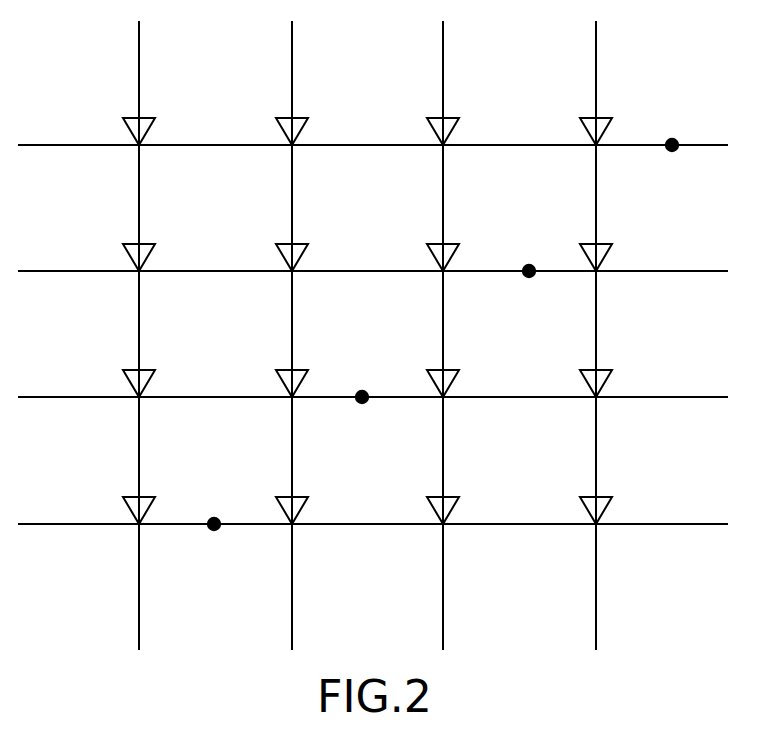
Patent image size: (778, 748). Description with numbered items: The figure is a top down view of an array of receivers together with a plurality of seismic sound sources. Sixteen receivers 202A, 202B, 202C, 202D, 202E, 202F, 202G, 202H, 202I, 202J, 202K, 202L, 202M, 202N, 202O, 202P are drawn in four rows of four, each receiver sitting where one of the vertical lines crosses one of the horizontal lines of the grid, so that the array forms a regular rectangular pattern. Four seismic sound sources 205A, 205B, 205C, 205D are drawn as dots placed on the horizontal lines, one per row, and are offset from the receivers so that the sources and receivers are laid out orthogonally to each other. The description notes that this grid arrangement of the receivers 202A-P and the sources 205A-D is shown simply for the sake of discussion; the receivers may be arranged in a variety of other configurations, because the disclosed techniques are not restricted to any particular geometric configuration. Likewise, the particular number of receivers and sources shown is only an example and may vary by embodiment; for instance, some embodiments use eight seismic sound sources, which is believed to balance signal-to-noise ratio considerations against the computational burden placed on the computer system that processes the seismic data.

The receiver 202A is at (148, 117).
The receiver 202B is at (301, 117).
The receiver 202C is at (452, 117).
The receiver 202D is at (605, 117).
The receiver 202E is at (148, 243).
The receiver 202F is at (301, 243).
The receiver 202G is at (452, 243).
The receiver 202H is at (605, 243).
The receiver 202I is at (148, 369).
The receiver 202J is at (303, 369).
The receiver 202K is at (449, 369).
The receiver 202L is at (605, 369).
The receiver 202M is at (148, 496).
The receiver 202N is at (352, 464).
The receiver 202O is at (452, 496).
The receiver 202P is at (605, 496).
The seismic sound source 205A is at (214, 530).
The seismic sound source 205B is at (362, 403).
The seismic sound source 205C is at (529, 277).
The seismic sound source 205D is at (672, 151).